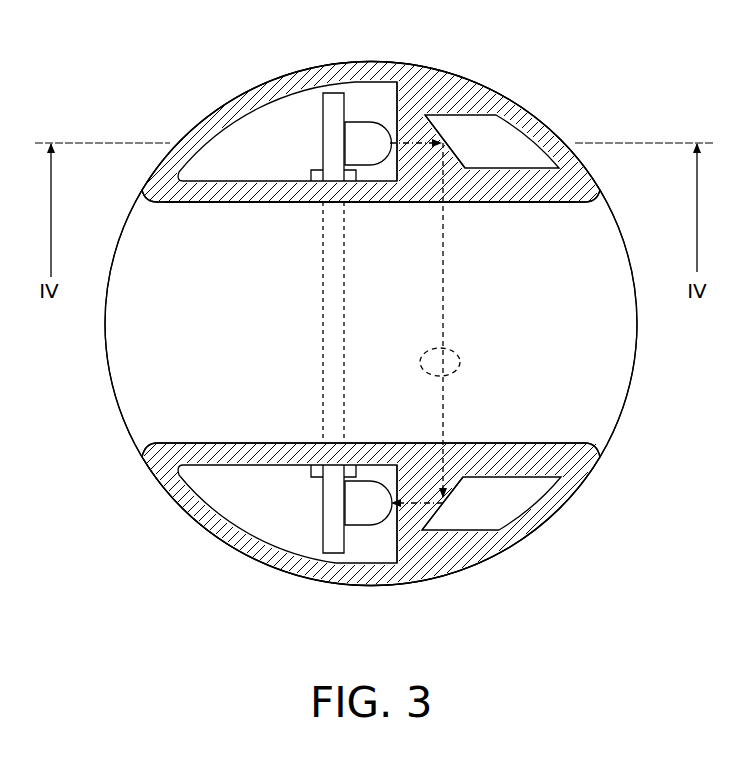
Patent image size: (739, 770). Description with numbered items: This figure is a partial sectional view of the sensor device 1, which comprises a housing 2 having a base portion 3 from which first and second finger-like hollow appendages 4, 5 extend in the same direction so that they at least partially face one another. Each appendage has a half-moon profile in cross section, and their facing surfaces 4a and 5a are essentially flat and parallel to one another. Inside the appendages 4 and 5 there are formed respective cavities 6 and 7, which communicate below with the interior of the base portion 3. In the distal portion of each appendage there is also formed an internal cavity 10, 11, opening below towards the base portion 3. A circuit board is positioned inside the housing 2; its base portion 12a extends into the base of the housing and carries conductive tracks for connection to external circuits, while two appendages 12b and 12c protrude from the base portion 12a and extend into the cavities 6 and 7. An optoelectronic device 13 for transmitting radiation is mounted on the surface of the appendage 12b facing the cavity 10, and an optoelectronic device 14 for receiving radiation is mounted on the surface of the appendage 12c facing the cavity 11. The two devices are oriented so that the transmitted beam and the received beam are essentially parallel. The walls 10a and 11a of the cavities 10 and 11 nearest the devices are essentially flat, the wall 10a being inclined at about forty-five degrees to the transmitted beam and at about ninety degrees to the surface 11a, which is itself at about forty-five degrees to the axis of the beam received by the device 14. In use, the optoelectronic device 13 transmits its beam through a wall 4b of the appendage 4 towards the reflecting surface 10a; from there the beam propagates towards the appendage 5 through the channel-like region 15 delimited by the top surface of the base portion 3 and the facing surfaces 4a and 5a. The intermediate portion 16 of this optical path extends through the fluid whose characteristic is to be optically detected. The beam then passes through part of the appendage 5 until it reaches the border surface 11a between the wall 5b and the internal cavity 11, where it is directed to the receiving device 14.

The sensor device 1 is at (156, 515).
The housing 2 is at (218, 107).
The base portion 3 is at (120, 415).
The first finger-like hollow appendage 4 is at (552, 137).
The facing surface of first appendage 4a is at (184, 205).
The wall of first appendage 4b is at (413, 130).
The second finger-like hollow appendage 5 is at (570, 480).
The facing surface of second appendage 5a is at (541, 443).
The wall of second appendage 5b is at (443, 497).
The cavity 6 is at (223, 168).
The cavity 7 is at (223, 498).
The internal cavity 10 is at (482, 159).
The wall of internal cavity 10a is at (445, 135).
The internal cavity 11 is at (483, 508).
The wall of internal cavity 11a is at (465, 480).
The base portion of circuit board 12a is at (323, 332).
The appendage of circuit board 12b is at (335, 108).
The appendage of circuit board 12c is at (330, 527).
The optoelectronic device for transmitting radiation 13 is at (358, 133).
The optoelectronic device for receiving radiation 14 is at (358, 515).
The channel-like region 15 is at (370, 331).
The intermediate portion of optical path 16 is at (450, 349).